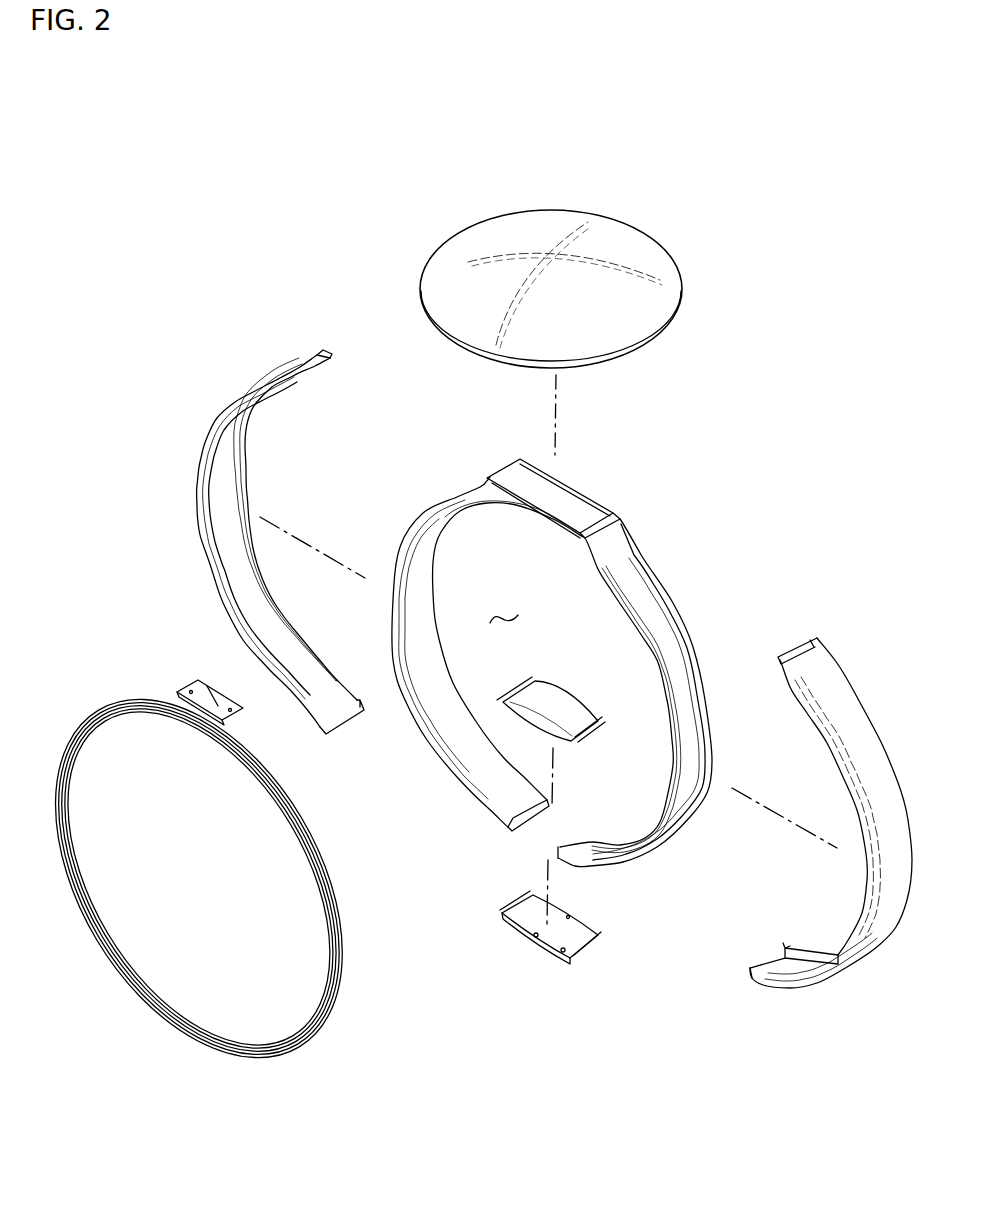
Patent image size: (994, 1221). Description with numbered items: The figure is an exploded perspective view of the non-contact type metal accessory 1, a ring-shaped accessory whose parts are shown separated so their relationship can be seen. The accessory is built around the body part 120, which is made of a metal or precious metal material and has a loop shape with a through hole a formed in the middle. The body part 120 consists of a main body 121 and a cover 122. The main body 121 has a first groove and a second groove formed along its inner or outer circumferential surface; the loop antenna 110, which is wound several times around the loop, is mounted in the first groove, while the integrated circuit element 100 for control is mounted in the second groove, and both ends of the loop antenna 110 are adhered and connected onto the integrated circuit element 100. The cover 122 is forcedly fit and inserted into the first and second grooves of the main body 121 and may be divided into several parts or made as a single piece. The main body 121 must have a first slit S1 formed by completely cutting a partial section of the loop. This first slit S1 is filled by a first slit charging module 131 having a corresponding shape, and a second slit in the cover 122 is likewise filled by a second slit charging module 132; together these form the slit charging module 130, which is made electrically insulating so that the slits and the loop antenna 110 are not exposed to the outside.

The non-contact type metal accessory 1 is at (710, 160).
The integrated circuit element 100 is at (208, 698).
The loop antenna 110 is at (84, 730).
The body part 120 is at (760, 482).
The main body 121 is at (678, 617).
The cover 122 is at (877, 660).
The slit charging module 130 is at (412, 1027).
The first slit charging module 131 is at (535, 718).
The second slit charging module 132 is at (528, 943).
The first slit S1 is at (540, 844).
The through hole a is at (503, 615).